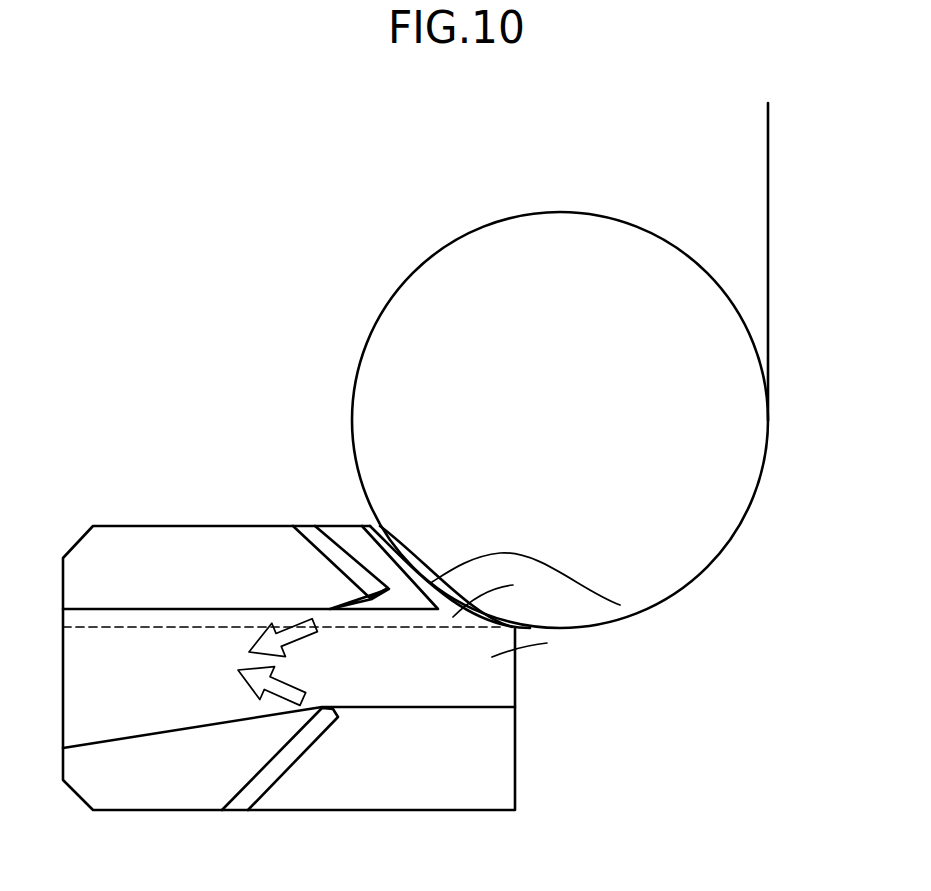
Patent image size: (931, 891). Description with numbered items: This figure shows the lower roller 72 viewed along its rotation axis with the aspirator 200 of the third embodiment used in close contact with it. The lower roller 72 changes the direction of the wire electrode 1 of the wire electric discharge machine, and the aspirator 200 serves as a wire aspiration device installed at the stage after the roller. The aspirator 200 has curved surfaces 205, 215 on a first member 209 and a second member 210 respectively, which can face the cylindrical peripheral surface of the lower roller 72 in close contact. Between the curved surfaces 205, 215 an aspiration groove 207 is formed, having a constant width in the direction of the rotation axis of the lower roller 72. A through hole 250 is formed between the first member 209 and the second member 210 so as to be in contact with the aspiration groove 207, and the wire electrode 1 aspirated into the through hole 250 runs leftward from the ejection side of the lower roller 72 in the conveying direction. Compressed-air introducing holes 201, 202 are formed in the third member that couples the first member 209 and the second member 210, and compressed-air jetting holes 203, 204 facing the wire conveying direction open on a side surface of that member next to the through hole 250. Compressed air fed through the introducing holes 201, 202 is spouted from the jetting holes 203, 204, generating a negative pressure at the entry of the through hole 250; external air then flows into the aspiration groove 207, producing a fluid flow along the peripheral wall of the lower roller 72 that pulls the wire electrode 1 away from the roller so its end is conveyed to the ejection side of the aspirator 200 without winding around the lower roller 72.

The wire electrode 1 is at (768, 174).
The lower roller 72 is at (706, 531).
The aspirator 200 is at (84, 556).
The compressed-air introducing hole 201 is at (313, 535).
The compressed-air introducing hole 202 is at (242, 802).
The compressed-air jetting hole 203 is at (337, 610).
The compressed-air jetting hole 204 is at (320, 707).
The curved surface 205 is at (614, 588).
The curved surface 215 is at (432, 582).
The aspiration groove 207 is at (395, 562).
The first member 209 is at (637, 674).
The second member 210 is at (492, 657).
The through hole 250 is at (453, 617).